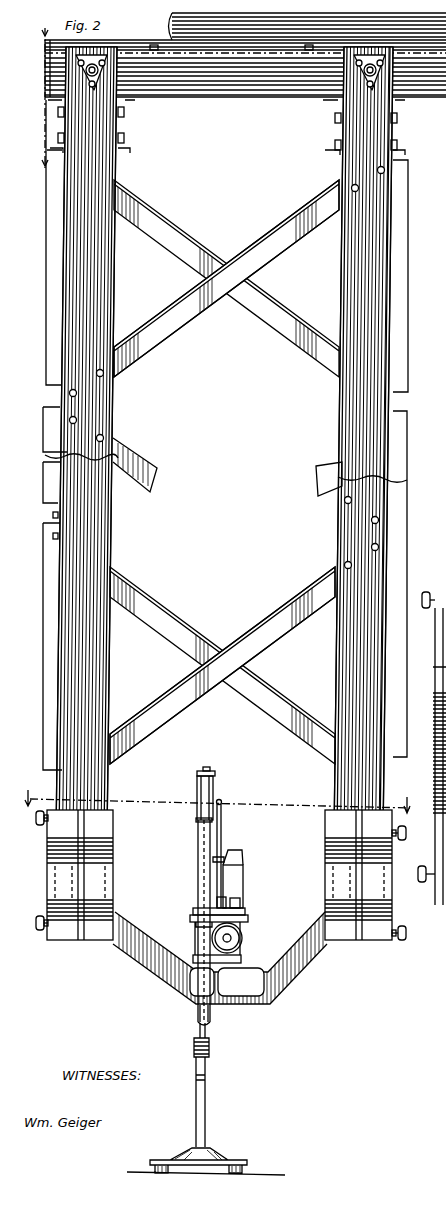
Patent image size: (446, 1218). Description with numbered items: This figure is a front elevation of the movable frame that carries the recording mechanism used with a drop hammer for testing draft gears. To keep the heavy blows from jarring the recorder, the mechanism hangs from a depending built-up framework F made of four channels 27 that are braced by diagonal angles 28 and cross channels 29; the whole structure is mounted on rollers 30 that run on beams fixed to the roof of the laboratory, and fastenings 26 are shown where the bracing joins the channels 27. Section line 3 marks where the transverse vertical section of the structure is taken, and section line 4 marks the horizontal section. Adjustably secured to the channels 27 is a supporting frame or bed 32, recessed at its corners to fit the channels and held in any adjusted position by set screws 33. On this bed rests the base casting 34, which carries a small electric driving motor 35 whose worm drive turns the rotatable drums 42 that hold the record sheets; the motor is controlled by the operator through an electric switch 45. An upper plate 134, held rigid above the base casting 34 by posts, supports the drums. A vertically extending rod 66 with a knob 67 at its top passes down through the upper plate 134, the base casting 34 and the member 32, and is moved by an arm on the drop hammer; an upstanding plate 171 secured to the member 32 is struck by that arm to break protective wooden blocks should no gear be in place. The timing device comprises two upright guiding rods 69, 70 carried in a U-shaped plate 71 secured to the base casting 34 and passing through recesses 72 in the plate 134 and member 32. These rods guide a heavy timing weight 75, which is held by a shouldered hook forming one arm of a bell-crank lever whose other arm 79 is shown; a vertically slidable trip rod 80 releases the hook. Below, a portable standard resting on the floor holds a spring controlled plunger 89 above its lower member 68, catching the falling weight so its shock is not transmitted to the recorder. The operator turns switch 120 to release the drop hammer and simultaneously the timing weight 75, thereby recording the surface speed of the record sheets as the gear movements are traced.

The section line 3- 3 is at (40, 101).
The section line 4- 4 is at (218, 805).
The depending built-up framework F is at (64, 262).
The bolts 26 is at (62, 380).
The channels 27 is at (100, 476).
The diagonal angles 28 is at (235, 262).
The cross channels 29 is at (126, 152).
The rollers 30 is at (100, 45).
The supporting frame or bed 32 is at (53, 855).
The set screws 33 is at (44, 814).
The base casting 34 is at (242, 960).
The electric driving motor 35 is at (243, 935).
The rotatable drums 42 is at (245, 872).
The electric switch 45 is at (240, 902).
The vertically extending rod 66 is at (223, 822).
The knob 67 is at (222, 803).
The lower shaft 68 is at (207, 1080).
The guiding rod 69 is at (197, 820).
The guiding rod 70 is at (211, 1010).
The U-shaped plate 71 is at (195, 910).
The recesses 72 is at (205, 924).
The timing weight 75 is at (198, 785).
The bell-crank lever arm 79 is at (210, 768).
The trip rod 80 is at (215, 778).
The spring controlled plunger 89 is at (207, 1032).
The switch 120 is at (224, 897).
The upper plate 134 is at (193, 917).
The upstanding plate 171 is at (236, 855).